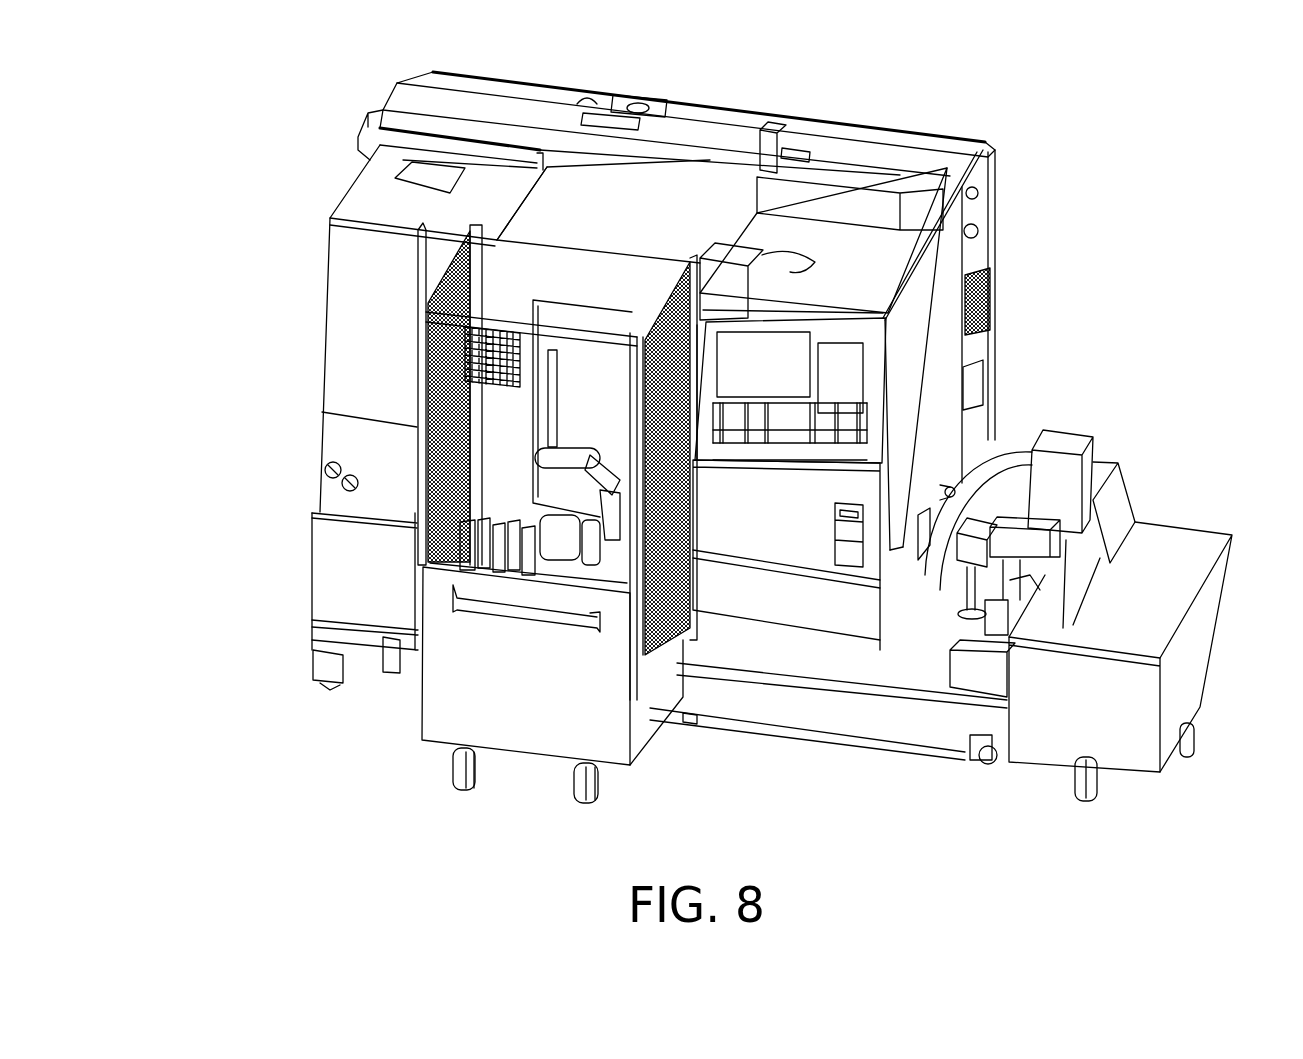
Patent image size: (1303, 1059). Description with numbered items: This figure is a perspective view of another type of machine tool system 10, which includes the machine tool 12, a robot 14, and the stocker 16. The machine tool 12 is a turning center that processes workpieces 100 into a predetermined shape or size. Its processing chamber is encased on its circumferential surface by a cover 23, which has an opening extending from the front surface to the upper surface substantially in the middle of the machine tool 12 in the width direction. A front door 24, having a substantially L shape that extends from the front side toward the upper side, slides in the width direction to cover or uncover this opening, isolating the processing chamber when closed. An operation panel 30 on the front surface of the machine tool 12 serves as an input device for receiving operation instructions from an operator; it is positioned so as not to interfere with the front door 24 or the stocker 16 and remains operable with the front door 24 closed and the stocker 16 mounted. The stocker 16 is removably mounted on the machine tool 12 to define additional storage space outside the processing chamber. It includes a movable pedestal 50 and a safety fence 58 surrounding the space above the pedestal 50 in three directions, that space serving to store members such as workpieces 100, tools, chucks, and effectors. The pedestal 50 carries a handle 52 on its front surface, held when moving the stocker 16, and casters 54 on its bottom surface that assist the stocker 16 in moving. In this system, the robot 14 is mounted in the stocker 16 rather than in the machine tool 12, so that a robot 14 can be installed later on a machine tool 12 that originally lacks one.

The machine tool system 10 is at (240, 385).
The machine tool 12 is at (900, 95).
The robot 14 is at (470, 457).
The stocker 16 is at (395, 727).
The cover 23 is at (802, 265).
The front door 24 is at (640, 197).
The operation panel 30 is at (793, 375).
The pedestal 50 is at (690, 722).
The handle 52 is at (453, 608).
The casters 54 is at (450, 780).
The safety fence 58 is at (693, 547).
The workpieces 100 is at (417, 562).